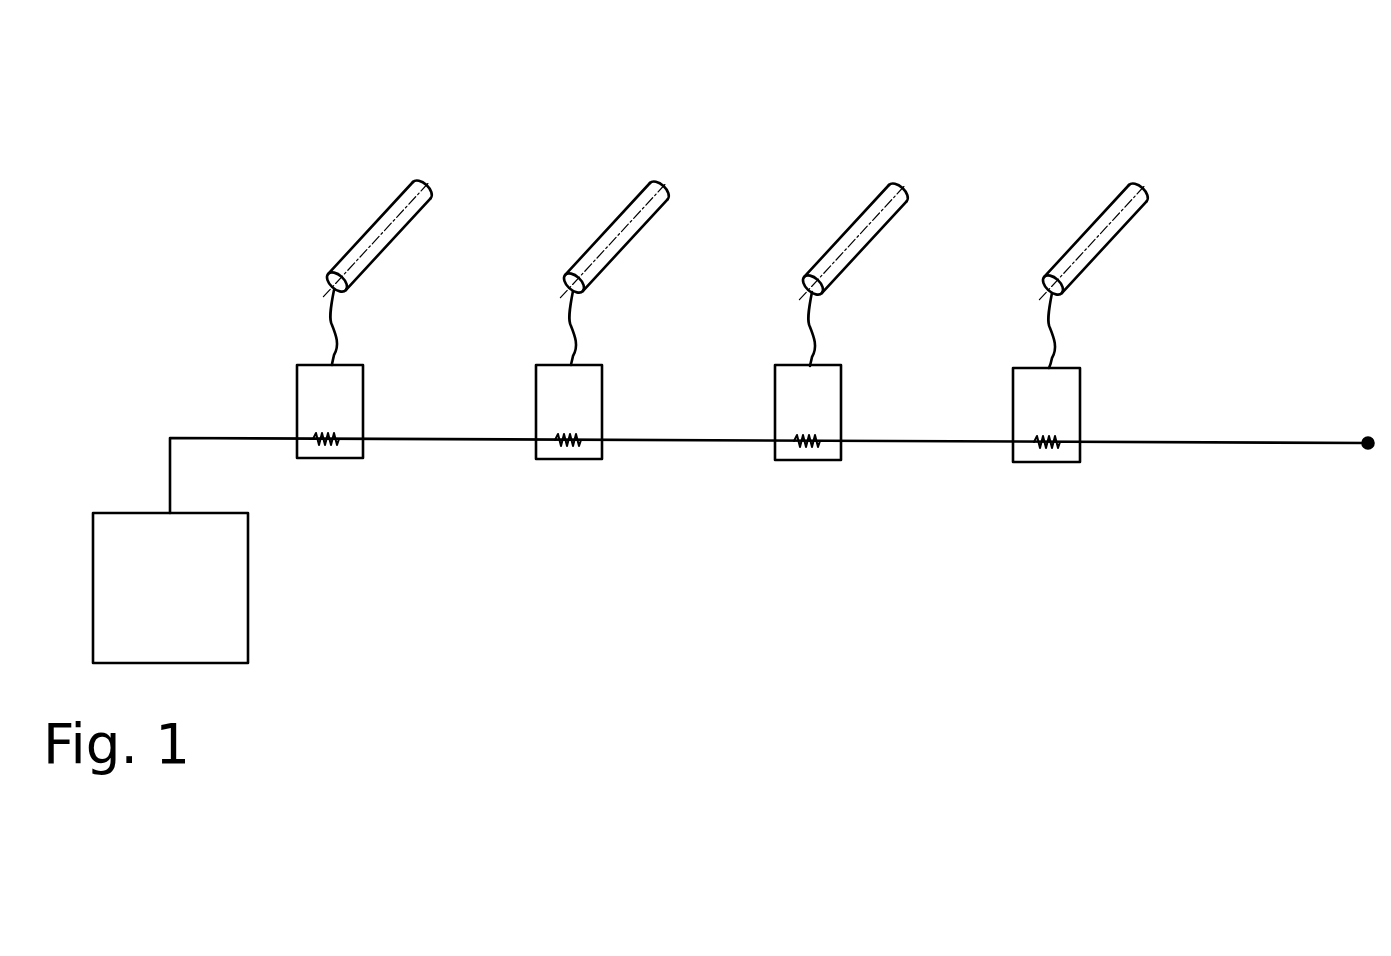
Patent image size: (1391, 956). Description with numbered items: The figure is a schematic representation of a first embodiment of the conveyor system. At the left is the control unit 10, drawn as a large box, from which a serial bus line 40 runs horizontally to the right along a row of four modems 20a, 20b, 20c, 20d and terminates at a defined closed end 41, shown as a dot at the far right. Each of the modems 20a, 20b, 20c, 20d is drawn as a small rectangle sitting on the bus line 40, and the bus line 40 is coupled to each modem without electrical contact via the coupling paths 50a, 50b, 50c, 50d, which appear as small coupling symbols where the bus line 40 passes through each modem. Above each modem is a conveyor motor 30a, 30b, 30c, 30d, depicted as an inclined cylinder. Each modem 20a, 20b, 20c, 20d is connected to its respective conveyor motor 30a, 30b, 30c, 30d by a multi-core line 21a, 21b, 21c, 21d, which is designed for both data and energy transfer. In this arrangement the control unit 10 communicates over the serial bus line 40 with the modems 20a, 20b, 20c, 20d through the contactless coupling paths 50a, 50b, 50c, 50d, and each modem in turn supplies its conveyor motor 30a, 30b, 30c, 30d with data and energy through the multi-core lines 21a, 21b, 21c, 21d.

The control unit 10 is at (228, 640).
The serial bus line 40 is at (222, 436).
The closed end 41 is at (1365, 448).
The modem 20a is at (345, 395).
The modem 20b is at (585, 402).
The modem 20c is at (823, 402).
The modem 20d is at (1062, 402).
The multi-core line 21a is at (330, 325).
The multi-core line 21b is at (570, 326).
The multi-core line 21c is at (808, 328).
The multi-core line 21d is at (1048, 328).
The conveyor motor 30a is at (397, 205).
The conveyor motor 30b is at (634, 208).
The conveyor motor 30c is at (868, 212).
The conveyor motor 30d is at (1108, 212).
The coupling path 50a is at (327, 452).
The coupling path 50b is at (563, 447).
The coupling path 50c is at (808, 447).
The coupling path 50d is at (1040, 450).